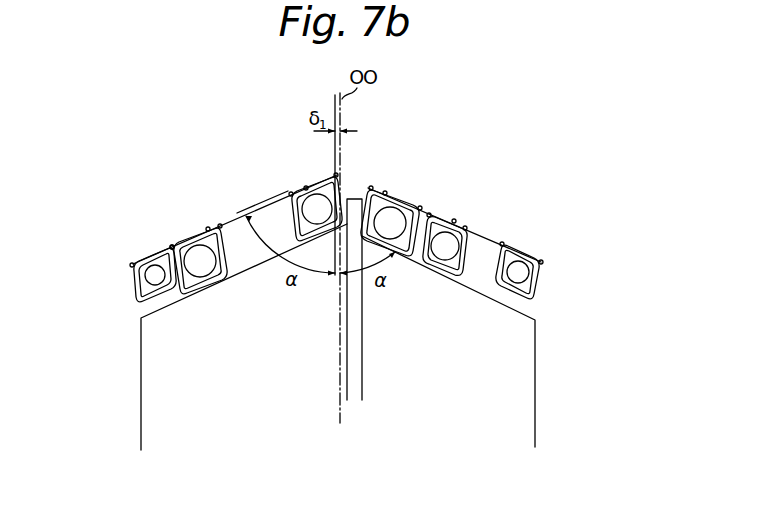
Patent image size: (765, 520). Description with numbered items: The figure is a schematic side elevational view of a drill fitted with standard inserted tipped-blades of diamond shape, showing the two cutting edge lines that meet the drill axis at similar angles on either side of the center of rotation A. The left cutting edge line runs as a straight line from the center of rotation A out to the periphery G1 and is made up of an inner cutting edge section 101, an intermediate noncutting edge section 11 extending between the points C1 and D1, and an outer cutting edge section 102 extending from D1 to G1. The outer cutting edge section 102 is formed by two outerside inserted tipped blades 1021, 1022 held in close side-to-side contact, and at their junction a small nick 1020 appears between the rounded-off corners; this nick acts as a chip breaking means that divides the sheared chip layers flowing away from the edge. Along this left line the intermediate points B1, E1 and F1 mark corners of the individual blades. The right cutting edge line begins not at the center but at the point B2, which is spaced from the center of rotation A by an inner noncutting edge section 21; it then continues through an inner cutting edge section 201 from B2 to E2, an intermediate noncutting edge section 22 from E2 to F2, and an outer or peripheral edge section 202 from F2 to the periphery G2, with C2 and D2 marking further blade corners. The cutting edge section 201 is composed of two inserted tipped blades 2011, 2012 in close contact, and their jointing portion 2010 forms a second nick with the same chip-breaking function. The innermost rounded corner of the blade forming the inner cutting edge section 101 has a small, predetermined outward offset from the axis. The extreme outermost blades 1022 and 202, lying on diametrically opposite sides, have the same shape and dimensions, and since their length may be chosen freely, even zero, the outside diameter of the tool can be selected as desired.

The intermediate noncutting edge section 11 is at (265, 212).
The inner noncutting edge section 21 is at (355, 192).
The intermediate noncutting edge section 22 is at (492, 238).
The inner cutting edge section 101 is at (317, 179).
The outer cutting edge section 102 is at (157, 183).
The outerside inserted tipped blade 1022 is at (152, 256).
The outerside inserted tipped blade 1021 is at (192, 240).
The nick 1020 is at (171, 246).
The inner cutting edge section 201 is at (482, 151).
The inserted tipped blade 2011 is at (419, 207).
The jointing portion 2010 is at (425, 213).
The inserted tipped blade 2012 is at (430, 215).
The outer or peripheral edge section 202 is at (527, 252).
The center of rotation A is at (337, 175).
The point B1 is at (306, 187).
The inner end of intermediate noncutting edge section C1 is at (291, 193).
The outer end of intermediate noncutting edge section D1 is at (221, 225).
The point E1 is at (208, 228).
The point F1 is at (173, 246).
The periphery G1 is at (131, 265).
The inner end of right cutting edge B2 is at (371, 187).
The point C2 is at (386, 192).
The point D2 is at (455, 220).
The outer end of inner cutting edge section E2 is at (466, 228).
The inner end of peripheral edge section F2 is at (503, 243).
The periphery G2 is at (542, 262).